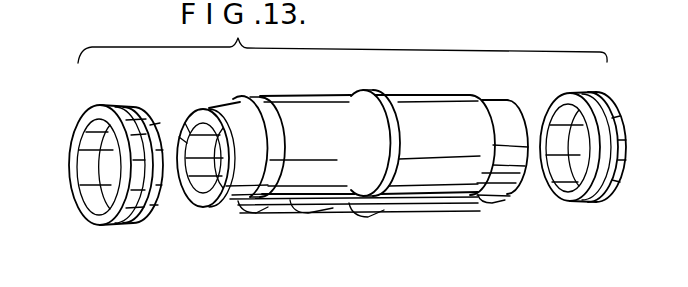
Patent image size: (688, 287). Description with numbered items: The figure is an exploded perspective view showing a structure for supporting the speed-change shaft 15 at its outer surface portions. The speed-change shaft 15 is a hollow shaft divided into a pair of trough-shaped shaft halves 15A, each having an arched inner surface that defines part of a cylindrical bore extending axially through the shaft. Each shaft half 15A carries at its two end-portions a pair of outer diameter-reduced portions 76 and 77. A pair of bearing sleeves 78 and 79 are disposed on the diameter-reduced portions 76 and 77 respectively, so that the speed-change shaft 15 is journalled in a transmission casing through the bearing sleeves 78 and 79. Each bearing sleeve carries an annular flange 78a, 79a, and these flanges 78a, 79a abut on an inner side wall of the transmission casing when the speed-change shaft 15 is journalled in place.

The speed-change shaft 15 is at (343, 216).
The shaft half 15A is at (443, 136).
The outer diameter-reduced portion 76 is at (240, 143).
The outer diameter-reduced portion 77 is at (513, 132).
The bearing sleeve 78 is at (112, 108).
The annular flange 78a is at (147, 118).
The bearing sleeve 79 is at (610, 118).
The annular flange 79a is at (577, 200).